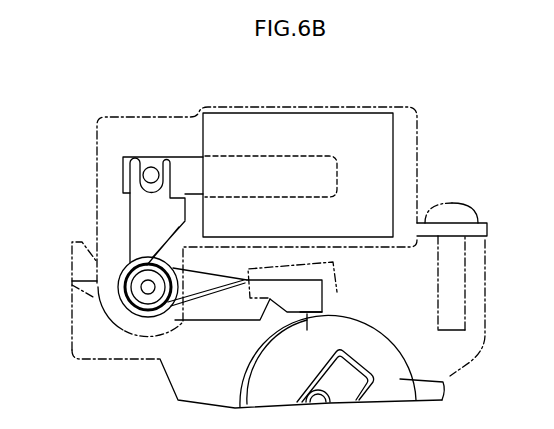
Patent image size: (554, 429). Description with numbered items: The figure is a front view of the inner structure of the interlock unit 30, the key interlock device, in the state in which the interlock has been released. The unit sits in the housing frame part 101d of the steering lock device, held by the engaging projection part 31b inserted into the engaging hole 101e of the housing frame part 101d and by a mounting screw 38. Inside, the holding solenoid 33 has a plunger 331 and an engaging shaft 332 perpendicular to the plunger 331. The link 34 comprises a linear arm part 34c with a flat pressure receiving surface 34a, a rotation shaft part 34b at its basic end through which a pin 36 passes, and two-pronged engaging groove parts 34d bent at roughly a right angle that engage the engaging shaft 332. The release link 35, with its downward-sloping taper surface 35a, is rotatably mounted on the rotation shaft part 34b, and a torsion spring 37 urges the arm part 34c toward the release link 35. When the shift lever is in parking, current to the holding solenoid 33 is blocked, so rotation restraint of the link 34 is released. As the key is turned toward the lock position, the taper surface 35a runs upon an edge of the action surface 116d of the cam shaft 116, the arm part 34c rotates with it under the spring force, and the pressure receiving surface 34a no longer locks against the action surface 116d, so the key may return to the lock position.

The interlock unit 30 is at (417, 138).
The holding solenoid 33 is at (318, 122).
The plunger 331 is at (185, 155).
The engaging shaft 332 is at (151, 167).
The link 34 is at (190, 322).
The pressure receiving surface 34a is at (312, 297).
The rotation shaft part 34b is at (138, 300).
The arm part 34c is at (222, 322).
The engaging groove part 34d is at (133, 168).
The release link 35 is at (335, 278).
The taper surface 35a is at (322, 311).
The pin 36 is at (147, 294).
The torsion spring 37 is at (150, 240).
The mounting screw 38 is at (472, 207).
The housing frame part 101d is at (72, 242).
The engaging hole 101e is at (80, 297).
The engaging projection part 31b is at (72, 281).
The cam shaft 116 is at (442, 383).
The action surface 116d is at (303, 323).